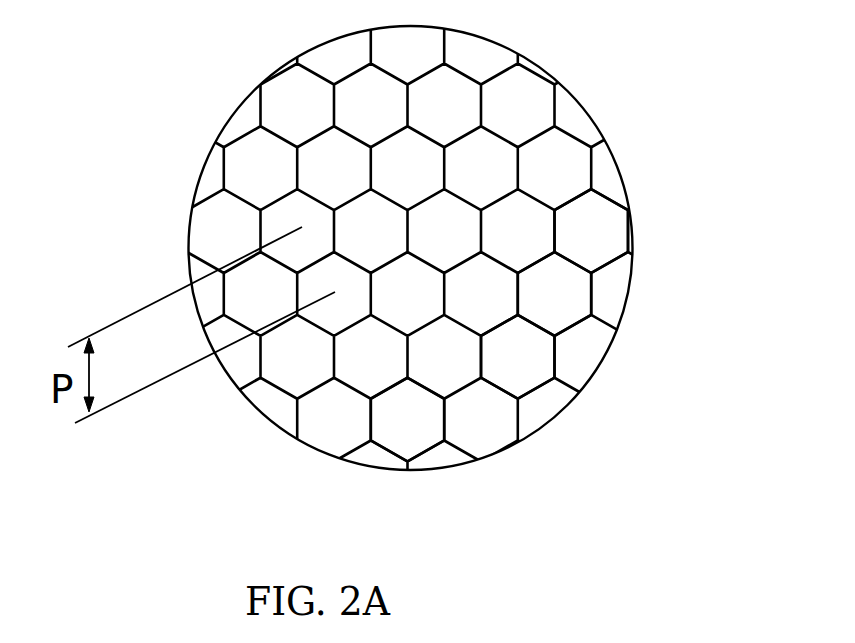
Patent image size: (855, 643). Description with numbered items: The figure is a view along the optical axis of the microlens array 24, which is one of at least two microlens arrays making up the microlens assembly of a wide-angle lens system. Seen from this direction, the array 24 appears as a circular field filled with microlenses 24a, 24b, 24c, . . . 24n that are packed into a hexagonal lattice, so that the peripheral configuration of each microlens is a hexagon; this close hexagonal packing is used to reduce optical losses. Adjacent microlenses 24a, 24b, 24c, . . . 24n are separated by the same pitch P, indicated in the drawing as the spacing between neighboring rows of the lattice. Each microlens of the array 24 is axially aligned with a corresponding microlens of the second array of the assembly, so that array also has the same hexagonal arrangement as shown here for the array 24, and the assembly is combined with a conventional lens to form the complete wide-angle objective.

The microlens array 24 is at (210, 119).
The microlens 24a is at (580, 218).
The microlens 24b is at (562, 292).
The microlens 24c is at (522, 343).
The microlens 24n is at (388, 417).